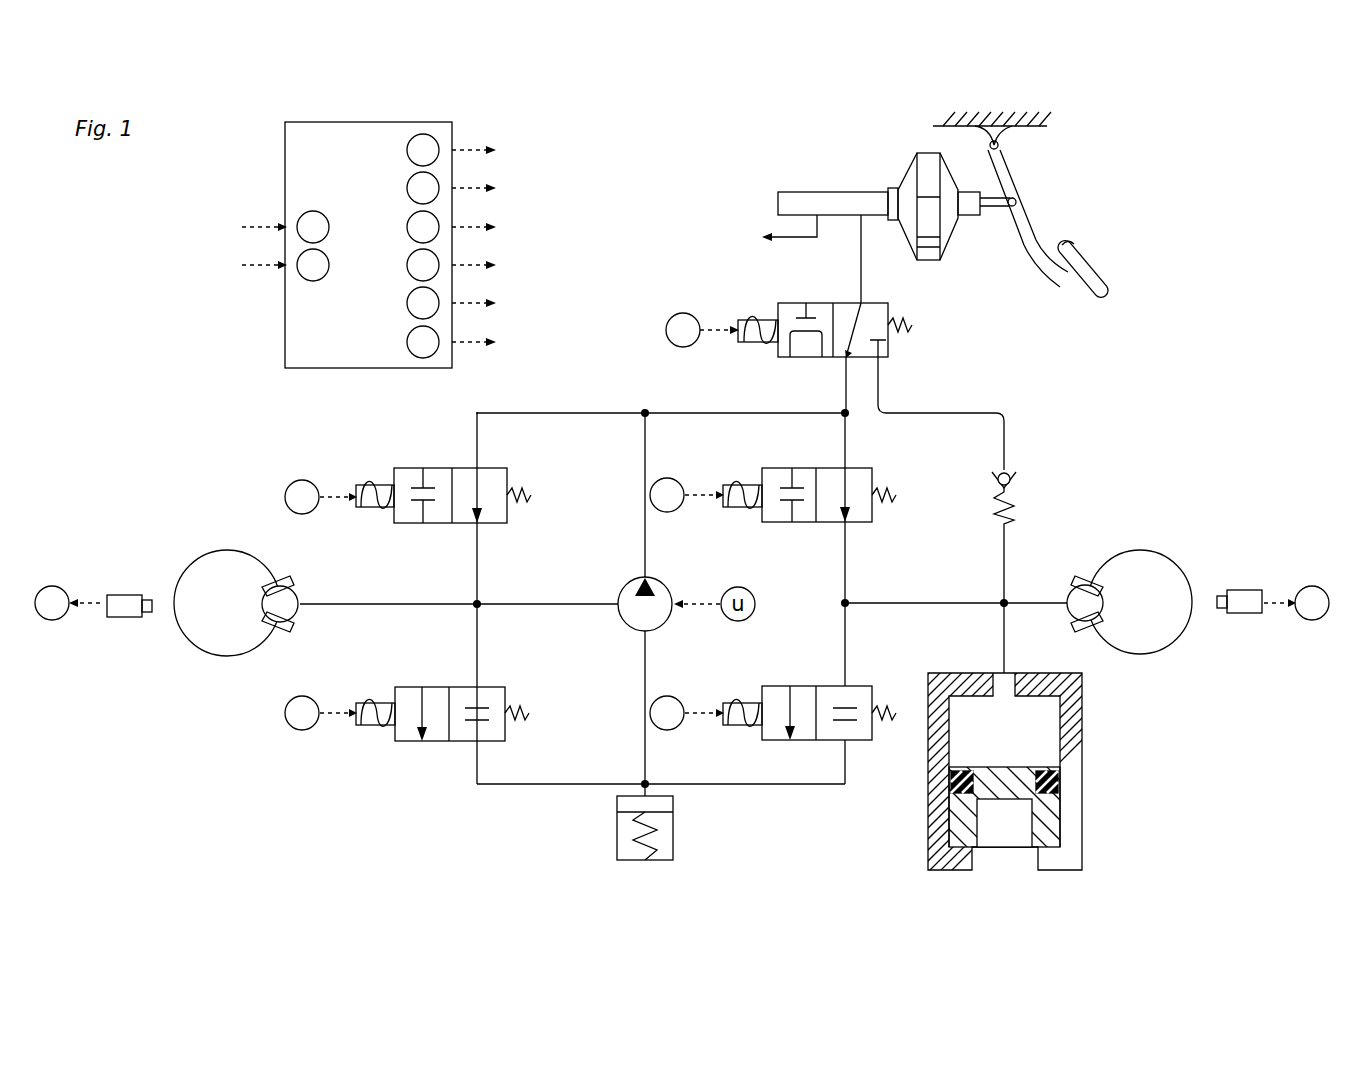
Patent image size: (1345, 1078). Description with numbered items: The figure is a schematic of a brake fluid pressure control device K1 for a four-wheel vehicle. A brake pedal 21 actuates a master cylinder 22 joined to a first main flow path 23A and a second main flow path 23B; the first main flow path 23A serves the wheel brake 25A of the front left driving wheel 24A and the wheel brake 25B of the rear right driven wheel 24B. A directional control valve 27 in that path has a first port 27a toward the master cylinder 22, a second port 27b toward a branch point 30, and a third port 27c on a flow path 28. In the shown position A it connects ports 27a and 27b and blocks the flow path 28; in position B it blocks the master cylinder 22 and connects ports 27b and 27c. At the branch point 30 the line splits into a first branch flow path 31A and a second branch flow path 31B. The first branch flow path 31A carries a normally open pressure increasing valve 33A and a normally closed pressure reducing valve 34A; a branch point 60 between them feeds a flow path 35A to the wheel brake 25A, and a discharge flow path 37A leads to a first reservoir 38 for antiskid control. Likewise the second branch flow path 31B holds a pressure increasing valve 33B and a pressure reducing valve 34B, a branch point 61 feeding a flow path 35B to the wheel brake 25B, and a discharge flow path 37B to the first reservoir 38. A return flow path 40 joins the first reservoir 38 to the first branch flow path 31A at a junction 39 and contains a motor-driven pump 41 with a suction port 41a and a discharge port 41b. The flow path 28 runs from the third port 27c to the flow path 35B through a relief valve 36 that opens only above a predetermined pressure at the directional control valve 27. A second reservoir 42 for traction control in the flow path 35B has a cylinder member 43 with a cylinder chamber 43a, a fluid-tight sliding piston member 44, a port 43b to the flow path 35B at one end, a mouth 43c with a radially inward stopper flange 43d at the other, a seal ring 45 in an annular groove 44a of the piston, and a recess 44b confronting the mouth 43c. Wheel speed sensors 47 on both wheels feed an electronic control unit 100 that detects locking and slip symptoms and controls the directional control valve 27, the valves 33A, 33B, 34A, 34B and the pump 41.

The electronic control unit 100 is at (385, 122).
The brake pedal 21 is at (1097, 282).
The master cylinder 22 is at (830, 182).
The first main flow path 23A is at (862, 263).
The second main flow path 23B is at (795, 243).
The front left driving wheel 24A is at (256, 550).
The rear right driven wheel 24B is at (1142, 550).
The wheel brake 25A is at (284, 630).
The wheel brake 25B is at (1076, 622).
The directional control valve 27 is at (728, 312).
The first port 27a is at (861, 303).
The second port 27b is at (838, 365).
The third port 27c is at (884, 363).
The position A is at (898, 348).
The position B is at (825, 302).
The flow path 28 is at (1012, 413).
The branch point 30 is at (858, 420).
The first branch flow path 31A is at (568, 413).
The second branch flow path 31B is at (845, 442).
The pressure increasing valve 33A is at (435, 468).
The pressure increasing valve 33B is at (873, 523).
The pressure reducing valve 34A is at (415, 742).
The pressure reducing valve 34B is at (870, 742).
The flow path 35A is at (382, 603).
The flow path 35B is at (1027, 600).
The relief valve 36 is at (1015, 471).
The discharge flow path 37A is at (530, 785).
The discharge flow path 37B is at (765, 786).
The first reservoir 38 is at (673, 834).
The junction 39 is at (645, 413).
The return flow path 40 is at (645, 543).
The pump 41 is at (668, 625).
The suction port 41a is at (640, 632).
The discharge port 41b is at (645, 577).
The second reservoir 42 is at (952, 753).
The cylinder member 43 is at (1083, 812).
The cylinder chamber 43a is at (1045, 738).
The port 43b is at (1000, 673).
The mouth 43c is at (1027, 858).
The flange 43d is at (950, 868).
The piston member 44 is at (1029, 796).
The annular groove 44a is at (975, 775).
The recess 44b is at (985, 822).
The seal ring 45 is at (1055, 795).
The wheel speed sensor 47 is at (130, 620).
The branch point 60 is at (477, 604).
The branch point 61 is at (845, 603).
The brake fluid pressure control device K1 is at (245, 409).